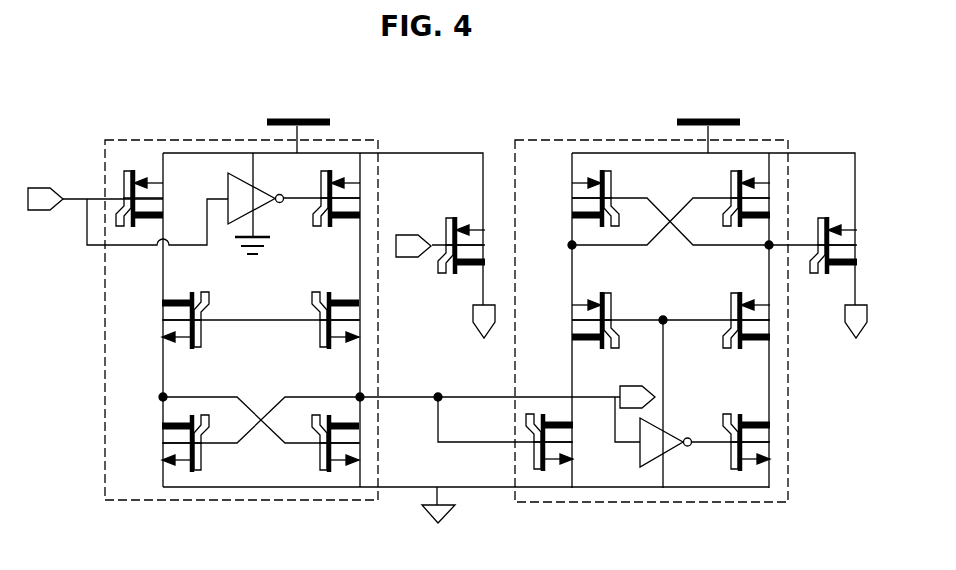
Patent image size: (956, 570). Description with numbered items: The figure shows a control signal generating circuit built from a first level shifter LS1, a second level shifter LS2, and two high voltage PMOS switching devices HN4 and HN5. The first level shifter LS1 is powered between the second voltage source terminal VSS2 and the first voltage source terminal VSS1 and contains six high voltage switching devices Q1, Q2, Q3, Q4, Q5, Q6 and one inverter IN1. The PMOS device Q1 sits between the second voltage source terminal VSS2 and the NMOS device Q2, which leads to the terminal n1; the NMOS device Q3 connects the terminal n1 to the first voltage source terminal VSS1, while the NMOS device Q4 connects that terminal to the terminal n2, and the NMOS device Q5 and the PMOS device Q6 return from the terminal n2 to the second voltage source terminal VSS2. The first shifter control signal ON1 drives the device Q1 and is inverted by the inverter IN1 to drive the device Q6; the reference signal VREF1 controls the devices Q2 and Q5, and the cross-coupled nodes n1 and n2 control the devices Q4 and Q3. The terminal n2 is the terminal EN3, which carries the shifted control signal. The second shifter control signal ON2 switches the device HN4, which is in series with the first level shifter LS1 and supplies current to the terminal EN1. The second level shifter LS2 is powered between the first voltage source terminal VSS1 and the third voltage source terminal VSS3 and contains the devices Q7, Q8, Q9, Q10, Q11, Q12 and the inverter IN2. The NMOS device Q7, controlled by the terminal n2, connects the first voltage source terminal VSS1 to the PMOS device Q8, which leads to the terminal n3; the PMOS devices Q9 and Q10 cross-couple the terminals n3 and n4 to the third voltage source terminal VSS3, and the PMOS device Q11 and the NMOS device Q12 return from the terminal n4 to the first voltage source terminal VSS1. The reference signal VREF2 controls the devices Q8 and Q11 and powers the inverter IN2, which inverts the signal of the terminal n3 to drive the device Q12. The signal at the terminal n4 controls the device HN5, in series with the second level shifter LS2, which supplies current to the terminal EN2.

The first level shifter LS1 is at (241, 337).
The second level shifter LS2 is at (651, 337).
The high voltage switching device Q1 is at (153, 201).
The high voltage switching device Q2 is at (192, 320).
The high voltage switching device Q3 is at (193, 444).
The high voltage switching device Q4 is at (326, 444).
The high voltage switching device Q5 is at (326, 320).
The high voltage switching device Q6 is at (325, 201).
The high voltage switching device Q7 is at (562, 444).
The high voltage switching device Q8 is at (606, 320).
The high voltage switching device Q9 is at (603, 198).
The high voltage switching device Q10 is at (736, 198).
The high voltage switching device Q11 is at (733, 320).
The high voltage switching device Q12 is at (736, 444).
The high voltage switching device HN4 is at (461, 234).
The fifth high voltage switching device HN5 is at (833, 234).
The inverter IN1 is at (256, 197).
The inverter IN2 is at (667, 440).
The terminal n1 is at (147, 397).
The terminal n2 is at (402, 387).
The terminal n3 is at (581, 254).
The terminal n4 is at (754, 254).
The first shifter control signal ON1 is at (45, 188).
The second shifter control signal ON2 is at (413, 235).
The terminal EN1 is at (483, 333).
The terminal EN2 is at (855, 334).
The terminal EN3 is at (637, 387).
The first voltage source terminal VSS1 is at (438, 519).
The second voltage source terminal VSS2 is at (298, 124).
The third voltage source terminal VSS3 is at (708, 124).
The reference signal VREF1 is at (261, 306).
The reference signal VREF2 is at (670, 393).